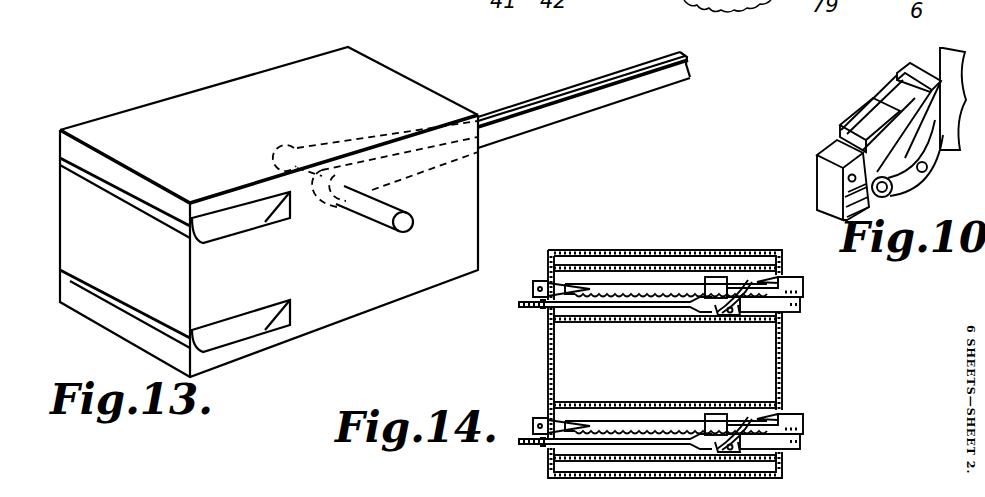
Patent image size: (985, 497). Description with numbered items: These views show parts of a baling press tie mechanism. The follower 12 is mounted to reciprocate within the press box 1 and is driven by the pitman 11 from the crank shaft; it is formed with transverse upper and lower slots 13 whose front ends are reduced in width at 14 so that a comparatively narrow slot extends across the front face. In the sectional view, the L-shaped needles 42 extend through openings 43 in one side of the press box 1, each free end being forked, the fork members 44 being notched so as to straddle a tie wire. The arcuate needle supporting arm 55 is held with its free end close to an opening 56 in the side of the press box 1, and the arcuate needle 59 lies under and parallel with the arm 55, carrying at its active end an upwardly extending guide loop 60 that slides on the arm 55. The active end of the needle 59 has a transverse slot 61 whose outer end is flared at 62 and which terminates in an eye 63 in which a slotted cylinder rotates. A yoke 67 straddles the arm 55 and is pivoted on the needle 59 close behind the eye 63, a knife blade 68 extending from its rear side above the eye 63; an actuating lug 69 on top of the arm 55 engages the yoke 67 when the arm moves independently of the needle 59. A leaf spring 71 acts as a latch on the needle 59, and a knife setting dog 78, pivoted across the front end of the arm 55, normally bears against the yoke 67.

In FIG. 14, the press box 1 is at (592, 258).
In FIG. 13, the pitman 11 is at (538, 115).
In FIG. 13, the follower 12 is at (218, 100).
In FIG. 14, the follower 12 is at (556, 362).
In FIG. 13, the transverse slots 13 is at (238, 215).
In FIG. 14, the transverse slots 13 is at (554, 320).
In FIG. 13, the reduced-width slot portions 14 is at (155, 205).
In FIG. 14, the L-shaped needle 42 is at (628, 302).
In FIG. 14, the openings 43 is at (548, 262).
In FIG. 14, the fork members 44 is at (700, 312).
In FIG. 10, the needle supporting arm 55 is at (943, 62).
In FIG. 14, the openings 56 is at (780, 277).
In FIG. 14, the arcuate needle 59 is at (760, 314).
In FIG. 10, the arcuate needle 59 is at (943, 128).
In FIG. 14, the guide loop 60 is at (718, 277).
In FIG. 10, the guide loop 60 is at (850, 122).
In FIG. 10, the transverse slot 61 is at (862, 197).
In FIG. 10, the flared outer end 62 is at (866, 214).
In FIG. 10, the eye 63 is at (892, 187).
In FIG. 10, the yoke 67 is at (897, 72).
In FIG. 14, the knife blade 68 is at (720, 318).
In FIG. 14, the actuating lug 69 is at (790, 284).
In FIG. 14, the leaf spring 71 is at (795, 307).
In FIG. 14, the knife setting dog 78 is at (540, 293).
In FIG. 10, the knife setting dog 78 is at (818, 172).